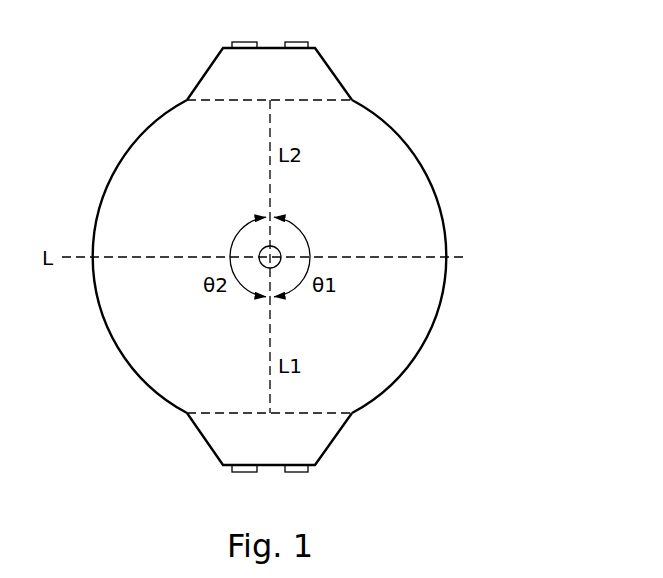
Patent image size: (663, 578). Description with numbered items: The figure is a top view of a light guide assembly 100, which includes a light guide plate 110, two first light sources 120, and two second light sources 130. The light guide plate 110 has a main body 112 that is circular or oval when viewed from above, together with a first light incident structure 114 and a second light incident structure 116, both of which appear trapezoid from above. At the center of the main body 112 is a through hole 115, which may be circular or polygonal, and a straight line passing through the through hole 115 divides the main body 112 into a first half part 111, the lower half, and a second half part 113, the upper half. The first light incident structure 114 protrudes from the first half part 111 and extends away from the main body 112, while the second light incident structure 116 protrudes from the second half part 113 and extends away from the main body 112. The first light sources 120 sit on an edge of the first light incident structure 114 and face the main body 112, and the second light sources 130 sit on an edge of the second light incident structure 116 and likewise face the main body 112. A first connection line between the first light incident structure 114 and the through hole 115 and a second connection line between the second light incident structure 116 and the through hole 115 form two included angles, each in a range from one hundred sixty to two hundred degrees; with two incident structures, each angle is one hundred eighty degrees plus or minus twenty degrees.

The light guide assembly 100 is at (315, 248).
The light guide plate 110 is at (540, 178).
The first half part 111 is at (150, 351).
The main body 112 is at (440, 246).
The second half part 113 is at (130, 200).
The first light incident structure 114 is at (308, 445).
The through hole 115 is at (260, 240).
The second light incident structure 116 is at (310, 67).
The first light source 120 is at (234, 469).
The second light source 130 is at (234, 46).